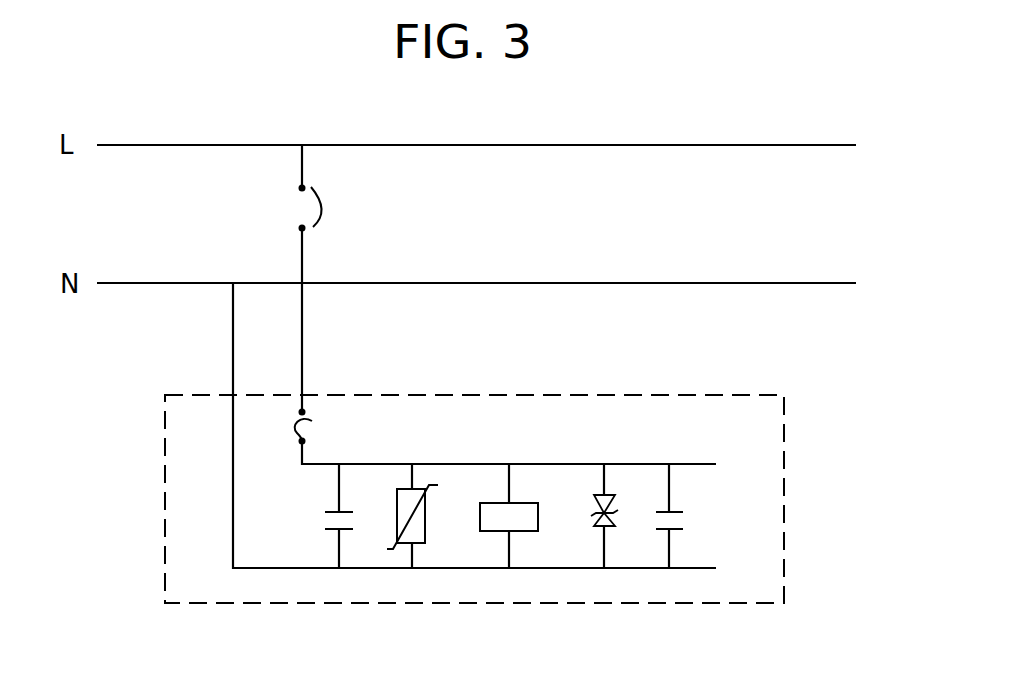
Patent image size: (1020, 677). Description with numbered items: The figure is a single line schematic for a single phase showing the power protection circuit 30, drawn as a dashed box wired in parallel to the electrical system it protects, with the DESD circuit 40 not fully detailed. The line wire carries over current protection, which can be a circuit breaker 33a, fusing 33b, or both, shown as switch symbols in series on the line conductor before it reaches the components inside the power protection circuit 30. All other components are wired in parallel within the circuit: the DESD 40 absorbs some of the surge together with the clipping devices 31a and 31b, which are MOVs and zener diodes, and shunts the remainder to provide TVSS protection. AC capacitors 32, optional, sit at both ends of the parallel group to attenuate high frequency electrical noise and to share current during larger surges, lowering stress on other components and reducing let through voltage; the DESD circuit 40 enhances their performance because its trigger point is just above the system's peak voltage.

The power protection circuit 30 is at (632, 393).
The clipping device 31a is at (405, 556).
The clipping device 31b is at (605, 545).
The AC capacitors 32 is at (325, 546).
The circuit breaker 33a is at (322, 212).
The fusing 33b is at (312, 422).
The DESD circuit 40 is at (508, 547).